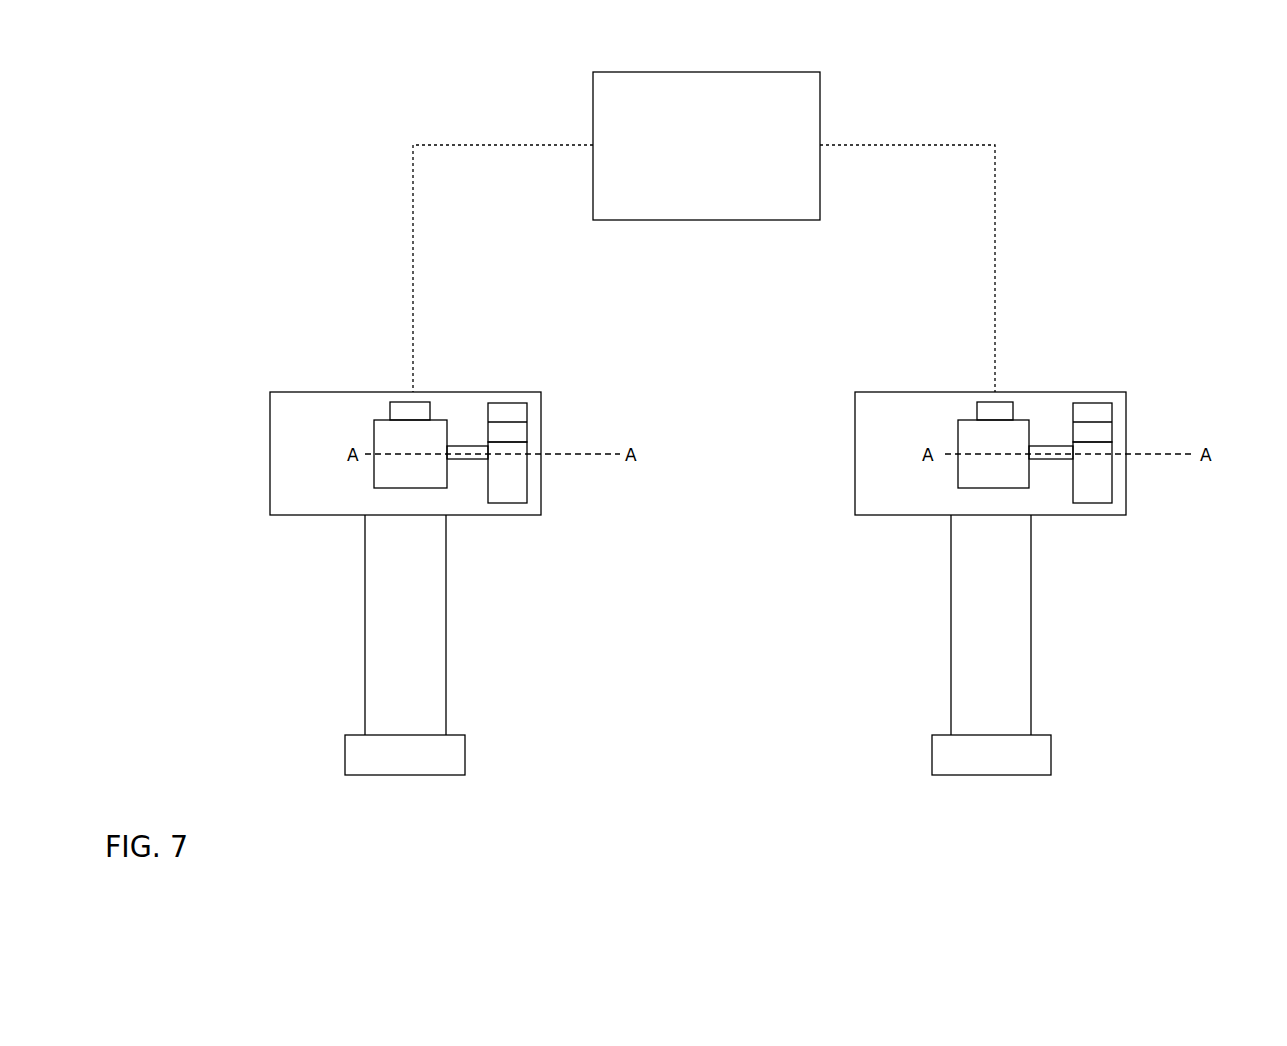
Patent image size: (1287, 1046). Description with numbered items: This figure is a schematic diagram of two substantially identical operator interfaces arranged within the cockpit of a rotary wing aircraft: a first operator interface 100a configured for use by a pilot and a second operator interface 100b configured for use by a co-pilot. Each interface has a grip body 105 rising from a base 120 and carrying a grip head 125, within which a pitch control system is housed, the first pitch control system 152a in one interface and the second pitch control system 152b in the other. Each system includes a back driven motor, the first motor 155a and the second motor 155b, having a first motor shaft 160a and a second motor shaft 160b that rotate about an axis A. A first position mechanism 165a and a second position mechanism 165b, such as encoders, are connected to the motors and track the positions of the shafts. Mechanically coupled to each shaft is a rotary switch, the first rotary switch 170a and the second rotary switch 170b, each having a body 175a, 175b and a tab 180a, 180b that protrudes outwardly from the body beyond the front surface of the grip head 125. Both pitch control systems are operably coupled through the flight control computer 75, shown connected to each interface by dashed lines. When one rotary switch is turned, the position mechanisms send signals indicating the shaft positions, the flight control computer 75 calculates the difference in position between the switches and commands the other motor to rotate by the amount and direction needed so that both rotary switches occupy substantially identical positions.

The flight control computer 75 is at (704, 232).
The first operator interface 100a is at (217, 297).
The second operator interface 100b is at (1153, 268).
The grip body 105 is at (365, 618).
The base 120 is at (367, 755).
The grip head 125 is at (268, 455).
The first pitch control system 152a is at (316, 432).
The second pitch control system 152b is at (923, 432).
The first motor 155a is at (425, 465).
The second motor 155b is at (1010, 465).
The first motor shaft 160a is at (467, 445).
The second motor shaft 160b is at (1052, 445).
The first position mechanism 165a is at (408, 410).
The second position mechanism 165b is at (1002, 412).
The first rotary switch 170a is at (530, 512).
The second rotary switch 170b is at (1117, 512).
The body of first rotary switch 175a is at (510, 462).
The body of second rotary switch 175b is at (1095, 463).
The tab of first rotary switch 180a is at (512, 435).
The tab of second rotary switch 180b is at (1097, 435).